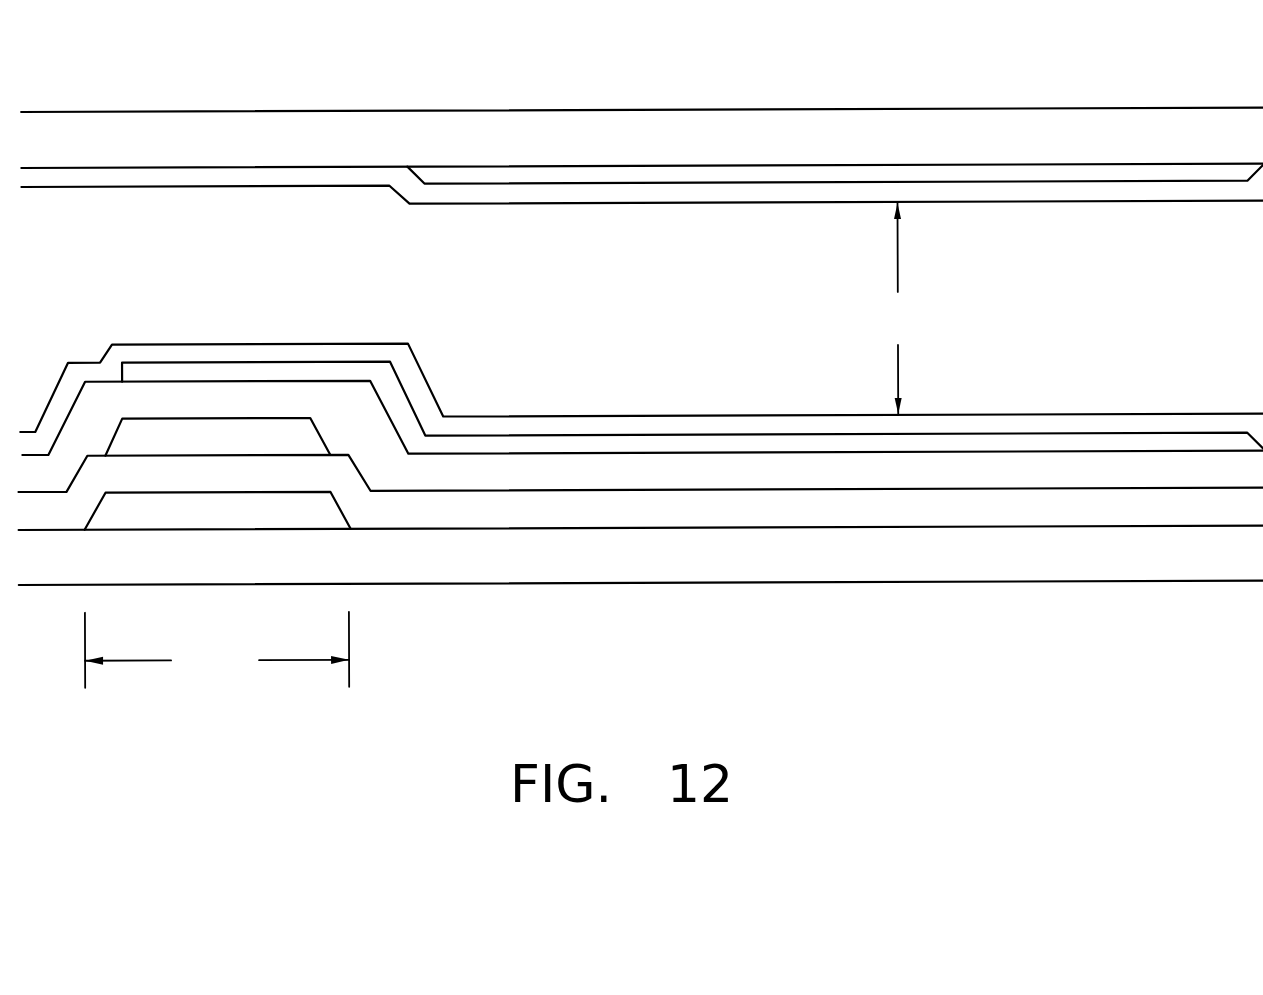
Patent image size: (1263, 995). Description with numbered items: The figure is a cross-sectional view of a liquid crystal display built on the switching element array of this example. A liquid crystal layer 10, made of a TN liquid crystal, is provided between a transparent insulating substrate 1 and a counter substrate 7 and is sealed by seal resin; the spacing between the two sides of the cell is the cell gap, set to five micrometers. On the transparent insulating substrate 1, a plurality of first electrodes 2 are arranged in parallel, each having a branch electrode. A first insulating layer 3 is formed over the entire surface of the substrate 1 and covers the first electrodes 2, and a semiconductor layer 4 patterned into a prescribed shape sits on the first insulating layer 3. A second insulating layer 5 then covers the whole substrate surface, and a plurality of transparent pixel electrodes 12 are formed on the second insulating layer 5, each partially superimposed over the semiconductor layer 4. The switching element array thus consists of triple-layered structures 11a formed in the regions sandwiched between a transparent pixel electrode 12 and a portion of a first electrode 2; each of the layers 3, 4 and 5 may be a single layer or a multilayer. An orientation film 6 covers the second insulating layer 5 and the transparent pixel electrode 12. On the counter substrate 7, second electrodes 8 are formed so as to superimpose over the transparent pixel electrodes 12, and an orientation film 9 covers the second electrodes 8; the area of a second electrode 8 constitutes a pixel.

The transparent insulating substrate 1 is at (641, 555).
The first electrode 2 is at (217, 511).
The first insulating layer 3 is at (640, 472).
The semiconductor layer 4 is at (217, 437).
The second insulating layer 5 is at (642, 416).
The orientation film 6 is at (1200, 417).
The counter substrate 7 is at (642, 138).
The second electrode 8 is at (1183, 176).
The orientation film 9 is at (1163, 209).
The liquid crystal layer 10 is at (734, 309).
The triple-layered structure 11a is at (217, 650).
The transparent pixel electrode 12 is at (1095, 447).